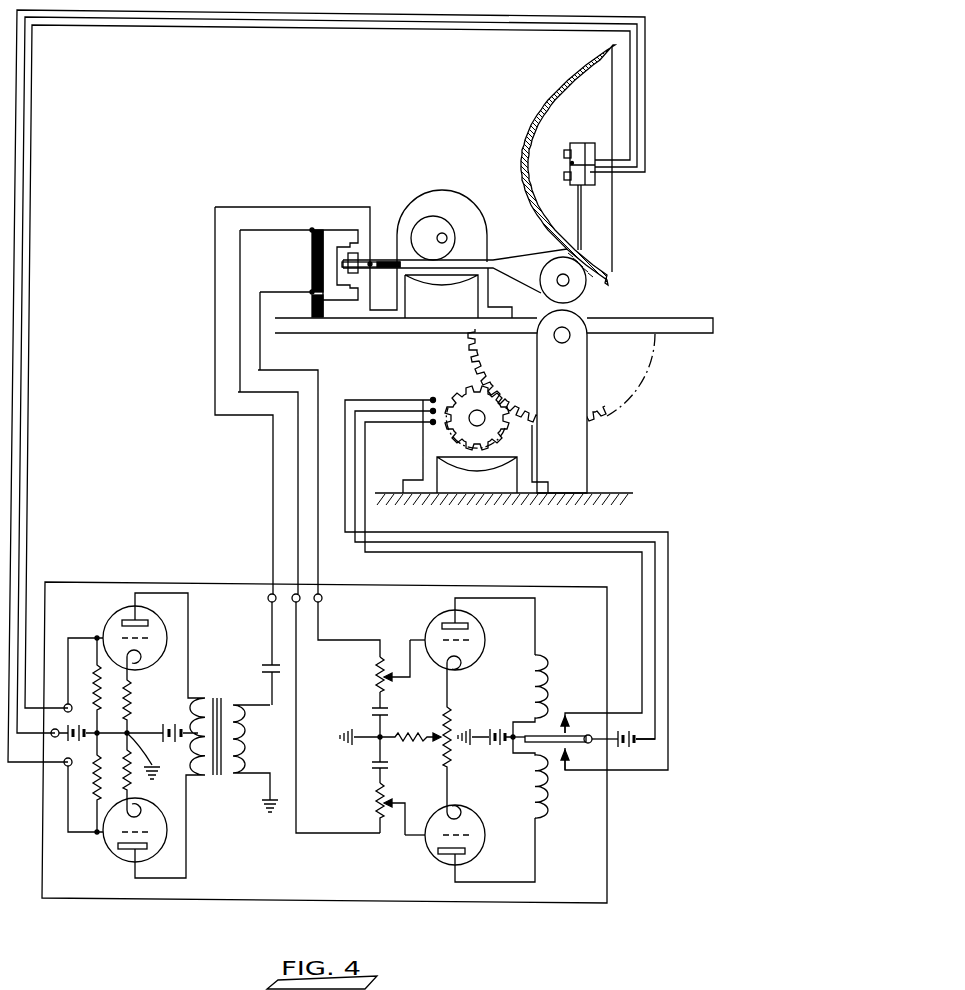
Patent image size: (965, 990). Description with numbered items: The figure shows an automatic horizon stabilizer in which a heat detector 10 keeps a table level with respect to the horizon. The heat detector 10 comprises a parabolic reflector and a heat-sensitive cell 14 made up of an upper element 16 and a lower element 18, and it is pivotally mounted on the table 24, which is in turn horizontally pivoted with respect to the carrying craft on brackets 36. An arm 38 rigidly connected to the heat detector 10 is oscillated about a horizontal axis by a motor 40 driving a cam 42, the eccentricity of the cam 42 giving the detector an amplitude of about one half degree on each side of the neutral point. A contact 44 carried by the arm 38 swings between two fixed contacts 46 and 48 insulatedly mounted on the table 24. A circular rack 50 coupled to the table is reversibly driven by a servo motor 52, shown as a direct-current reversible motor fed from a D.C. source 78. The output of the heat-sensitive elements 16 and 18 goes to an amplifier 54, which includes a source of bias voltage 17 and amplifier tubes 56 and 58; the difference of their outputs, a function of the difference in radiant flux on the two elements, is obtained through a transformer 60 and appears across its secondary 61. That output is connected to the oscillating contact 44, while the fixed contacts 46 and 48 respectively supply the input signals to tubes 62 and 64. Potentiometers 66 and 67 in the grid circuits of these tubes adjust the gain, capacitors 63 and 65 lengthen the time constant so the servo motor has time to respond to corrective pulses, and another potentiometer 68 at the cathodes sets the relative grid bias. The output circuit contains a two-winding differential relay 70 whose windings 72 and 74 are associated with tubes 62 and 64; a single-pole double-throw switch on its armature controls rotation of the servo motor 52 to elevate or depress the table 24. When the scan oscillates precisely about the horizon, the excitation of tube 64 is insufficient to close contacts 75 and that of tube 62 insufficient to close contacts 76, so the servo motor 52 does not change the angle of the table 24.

The heat detector 10 is at (631, 221).
The heat-sensitive cell 14 is at (577, 153).
The upper element 16 is at (564, 152).
The lower element 18 is at (564, 176).
The source of bias voltage 17 is at (64, 741).
The table 24 is at (645, 318).
The brackets 36 is at (583, 460).
The arm 38 is at (522, 258).
The motor 40 is at (446, 190).
The cam 42 is at (426, 222).
The contact 44 is at (362, 267).
The fixed contact 46 is at (332, 231).
The fixed contact 48 is at (347, 293).
The circular rack 50 is at (561, 377).
The servo motor 52 is at (456, 380).
The amplifier 54 is at (228, 574).
The amplifier tube 56 is at (158, 661).
The amplifier tube 58 is at (111, 853).
The transformer 60 is at (222, 705).
The secondary 61 is at (243, 757).
The tube 62 is at (434, 856).
The capacitor 63 is at (372, 713).
The tube 64 is at (440, 617).
The capacitor 65 is at (372, 766).
The potentiometer 66 is at (376, 670).
The potentiometer 67 is at (376, 802).
The potentiometer 68 is at (445, 727).
The differential relay 70 is at (580, 638).
The relay winding 72 is at (527, 796).
The relay winding 74 is at (527, 691).
The contacts 75 is at (567, 731).
The contacts 76 is at (568, 757).
The D.C. source 78 is at (626, 748).